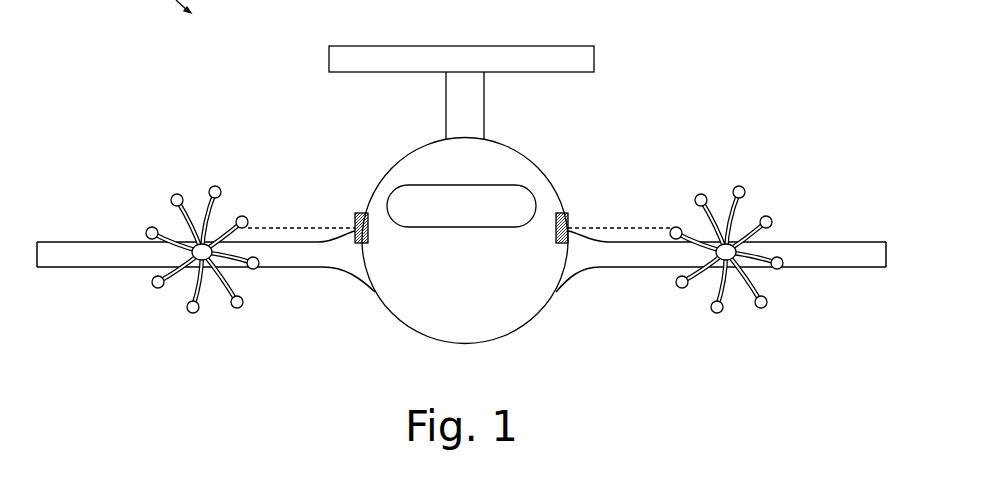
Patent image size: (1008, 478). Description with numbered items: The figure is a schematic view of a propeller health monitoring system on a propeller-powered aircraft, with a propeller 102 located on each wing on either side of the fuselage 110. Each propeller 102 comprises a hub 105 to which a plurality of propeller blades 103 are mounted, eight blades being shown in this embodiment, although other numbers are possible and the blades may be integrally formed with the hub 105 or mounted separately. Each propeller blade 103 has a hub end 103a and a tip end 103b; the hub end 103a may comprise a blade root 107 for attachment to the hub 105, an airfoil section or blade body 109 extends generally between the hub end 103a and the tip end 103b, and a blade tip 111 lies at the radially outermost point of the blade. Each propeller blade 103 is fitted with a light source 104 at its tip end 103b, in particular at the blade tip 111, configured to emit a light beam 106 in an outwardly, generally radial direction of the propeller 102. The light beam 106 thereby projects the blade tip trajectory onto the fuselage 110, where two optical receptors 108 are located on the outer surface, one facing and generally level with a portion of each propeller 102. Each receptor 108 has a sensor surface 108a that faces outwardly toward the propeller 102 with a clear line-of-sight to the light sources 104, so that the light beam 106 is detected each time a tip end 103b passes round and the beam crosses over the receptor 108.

The propeller 102 is at (414, 250).
The propeller blade 103 is at (236, 286).
The hub end 103a is at (240, 270).
The tip end 103b is at (241, 309).
The light source 104 is at (240, 216).
The hub 105 is at (731, 221).
The light beam 106 is at (304, 226).
The blade root 107 is at (743, 259).
The optical receptor 108 is at (360, 212).
The sensor surface 108a is at (569, 225).
The blade body 109 is at (745, 289).
The fuselage 110 is at (543, 177).
The blade tip 111 is at (766, 299).